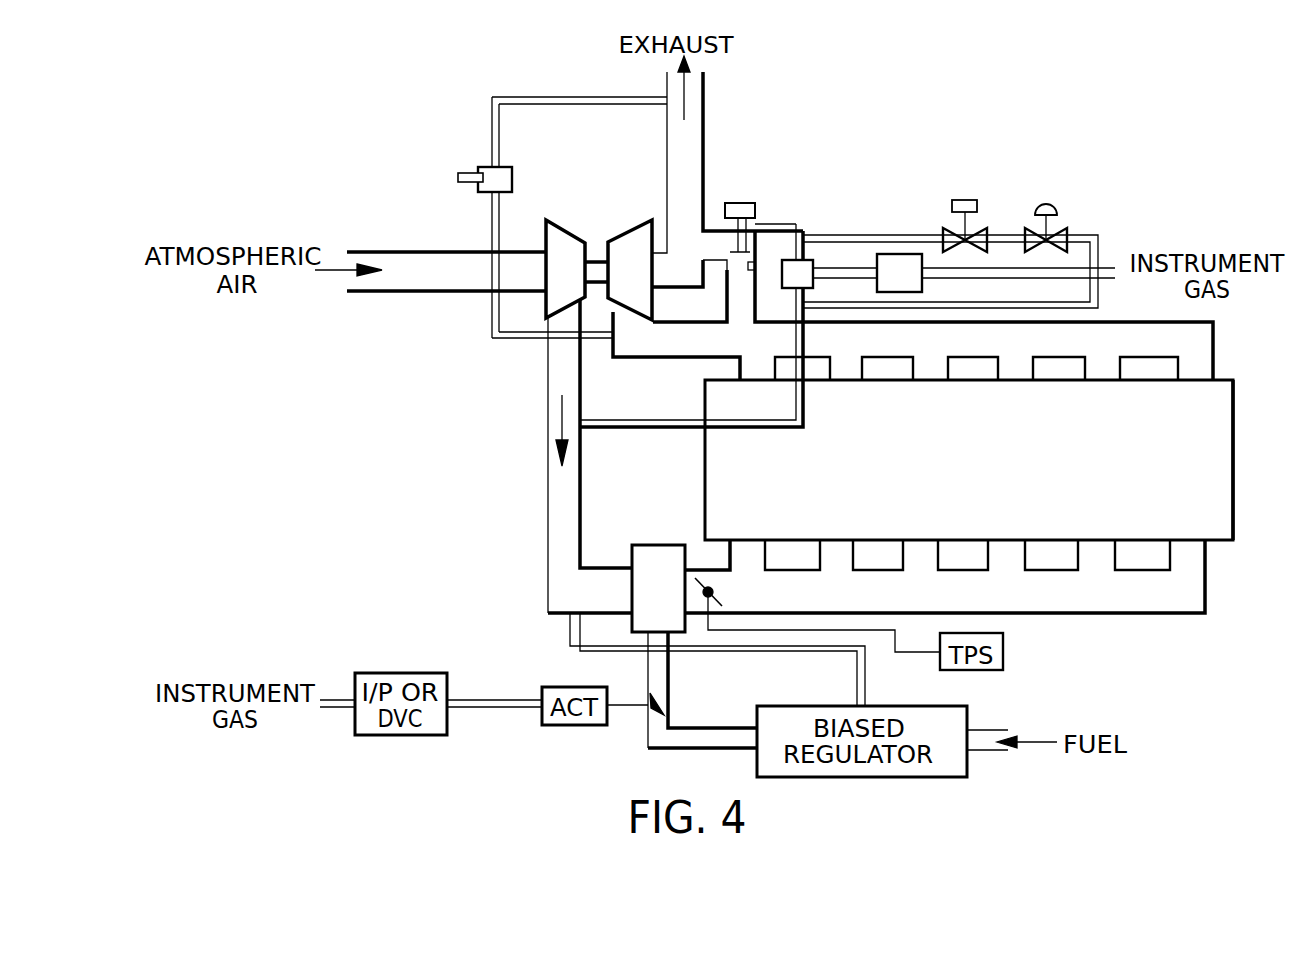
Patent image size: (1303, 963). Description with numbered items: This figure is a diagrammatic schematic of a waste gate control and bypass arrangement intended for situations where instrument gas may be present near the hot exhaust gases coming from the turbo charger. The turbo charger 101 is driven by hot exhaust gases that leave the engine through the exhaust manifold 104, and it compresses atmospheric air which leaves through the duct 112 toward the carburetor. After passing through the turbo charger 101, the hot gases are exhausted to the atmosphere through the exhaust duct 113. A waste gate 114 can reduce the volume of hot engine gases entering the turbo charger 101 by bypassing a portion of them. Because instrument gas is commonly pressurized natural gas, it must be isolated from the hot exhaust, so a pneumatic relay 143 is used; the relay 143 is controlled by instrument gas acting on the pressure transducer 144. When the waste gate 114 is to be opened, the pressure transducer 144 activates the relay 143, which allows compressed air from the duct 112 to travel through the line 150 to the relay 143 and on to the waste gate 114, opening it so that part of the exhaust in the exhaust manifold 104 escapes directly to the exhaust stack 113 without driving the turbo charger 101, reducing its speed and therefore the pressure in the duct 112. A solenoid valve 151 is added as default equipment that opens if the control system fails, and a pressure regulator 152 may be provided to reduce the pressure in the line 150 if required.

The turbo charger 101 is at (590, 208).
The exhaust manifold 104 is at (983, 360).
The duct 112 is at (548, 372).
The exhaust duct 113 is at (707, 101).
The waste gate 114 is at (745, 203).
The pneumatic relay 143 is at (810, 260).
The pressure transducer 144 is at (892, 254).
The line 150 is at (667, 418).
The solenoid valve 151 is at (970, 198).
The pressure regulator 152 is at (1054, 200).